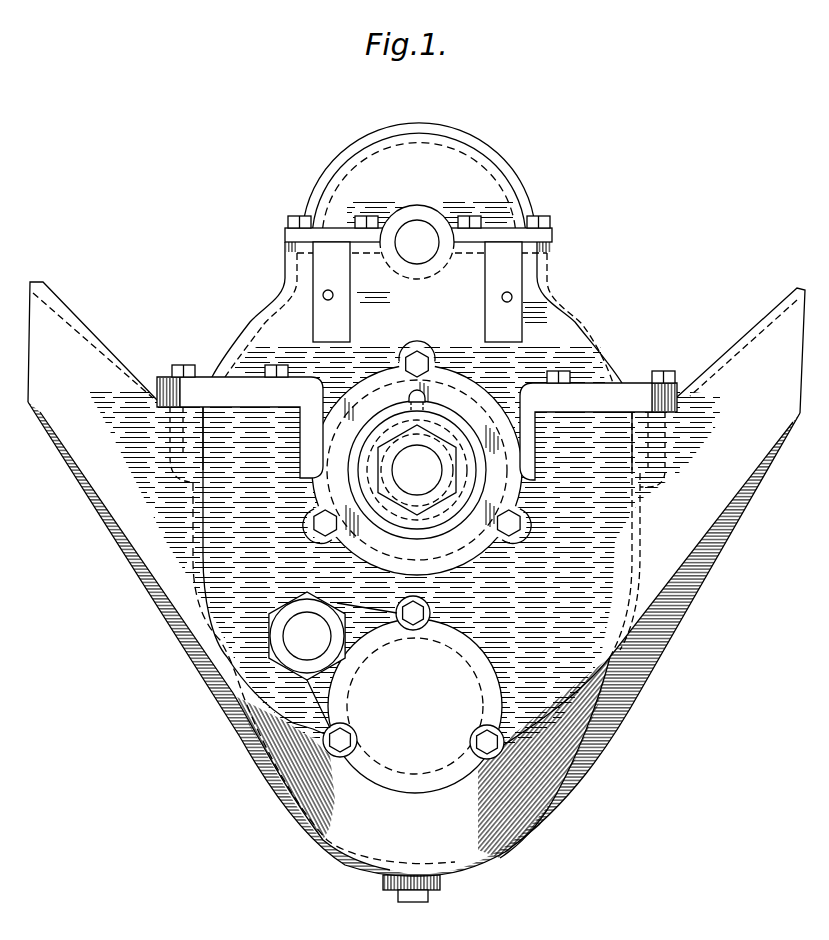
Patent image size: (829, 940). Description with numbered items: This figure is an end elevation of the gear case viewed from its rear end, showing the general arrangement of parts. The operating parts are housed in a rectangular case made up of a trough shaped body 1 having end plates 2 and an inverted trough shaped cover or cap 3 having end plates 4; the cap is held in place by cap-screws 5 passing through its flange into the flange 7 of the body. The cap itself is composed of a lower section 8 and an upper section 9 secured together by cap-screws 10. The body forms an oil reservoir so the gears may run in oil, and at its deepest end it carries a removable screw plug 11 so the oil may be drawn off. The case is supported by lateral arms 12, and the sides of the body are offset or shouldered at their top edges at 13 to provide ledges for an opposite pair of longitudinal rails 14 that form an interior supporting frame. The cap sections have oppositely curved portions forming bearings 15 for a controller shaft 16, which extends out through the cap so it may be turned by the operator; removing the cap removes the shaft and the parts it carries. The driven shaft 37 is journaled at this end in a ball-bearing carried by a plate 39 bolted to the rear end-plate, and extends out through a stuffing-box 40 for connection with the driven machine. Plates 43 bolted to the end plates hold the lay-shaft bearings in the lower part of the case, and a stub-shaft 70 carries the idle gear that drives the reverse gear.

The trough shaped body 1 is at (561, 797).
The end plates 2 is at (600, 523).
The cover or cap 3 is at (592, 326).
The end plates 4 is at (558, 315).
The cap-screws 5 is at (178, 372).
The flange 7 is at (417, 428).
The lower section 8 is at (548, 263).
The upper section 9 is at (503, 169).
The cap-screws 10 is at (295, 216).
The screw plug 11 is at (441, 884).
The lateral arms 12 is at (416, 347).
The offset or shoulder 13 is at (172, 433).
The longitudinal rails 14 is at (637, 440).
The bearings 15 is at (434, 222).
The controller shaft 16 is at (414, 230).
The driven shaft 37 is at (430, 477).
The plate 39 is at (433, 371).
The stuffing-box 40 is at (447, 420).
The plates 43 is at (487, 655).
The stub-shaft 70 is at (333, 660).